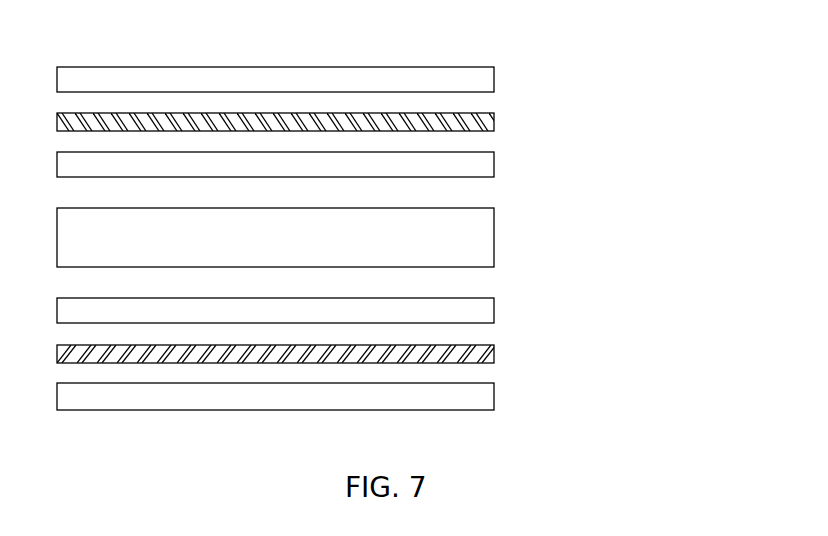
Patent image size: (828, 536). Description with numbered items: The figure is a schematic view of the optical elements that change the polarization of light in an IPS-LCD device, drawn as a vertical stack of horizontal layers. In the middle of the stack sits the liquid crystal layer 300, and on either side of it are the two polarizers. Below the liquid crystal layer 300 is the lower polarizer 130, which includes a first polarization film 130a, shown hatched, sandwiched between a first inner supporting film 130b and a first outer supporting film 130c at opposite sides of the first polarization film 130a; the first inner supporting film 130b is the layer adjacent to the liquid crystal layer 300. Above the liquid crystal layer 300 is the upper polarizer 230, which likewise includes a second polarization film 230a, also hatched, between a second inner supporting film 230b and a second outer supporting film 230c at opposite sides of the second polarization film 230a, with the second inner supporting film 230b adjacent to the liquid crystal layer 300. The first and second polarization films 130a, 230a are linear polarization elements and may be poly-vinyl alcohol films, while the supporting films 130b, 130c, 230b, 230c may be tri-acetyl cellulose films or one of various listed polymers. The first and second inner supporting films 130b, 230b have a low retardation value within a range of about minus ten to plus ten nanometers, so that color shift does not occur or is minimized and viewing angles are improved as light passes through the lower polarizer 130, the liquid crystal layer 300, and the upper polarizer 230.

The upper polarizer 230 is at (387, 118).
The second outer supporting film 230c is at (494, 78).
The second polarization film 230a is at (494, 122).
The second inner supporting film 230b is at (494, 164).
The liquid crystal layer 300 is at (494, 240).
The lower polarizer 130 is at (386, 349).
The first inner supporting film 130b is at (494, 308).
The first polarization film 130a is at (494, 352).
The first outer supporting film 130c is at (494, 393).